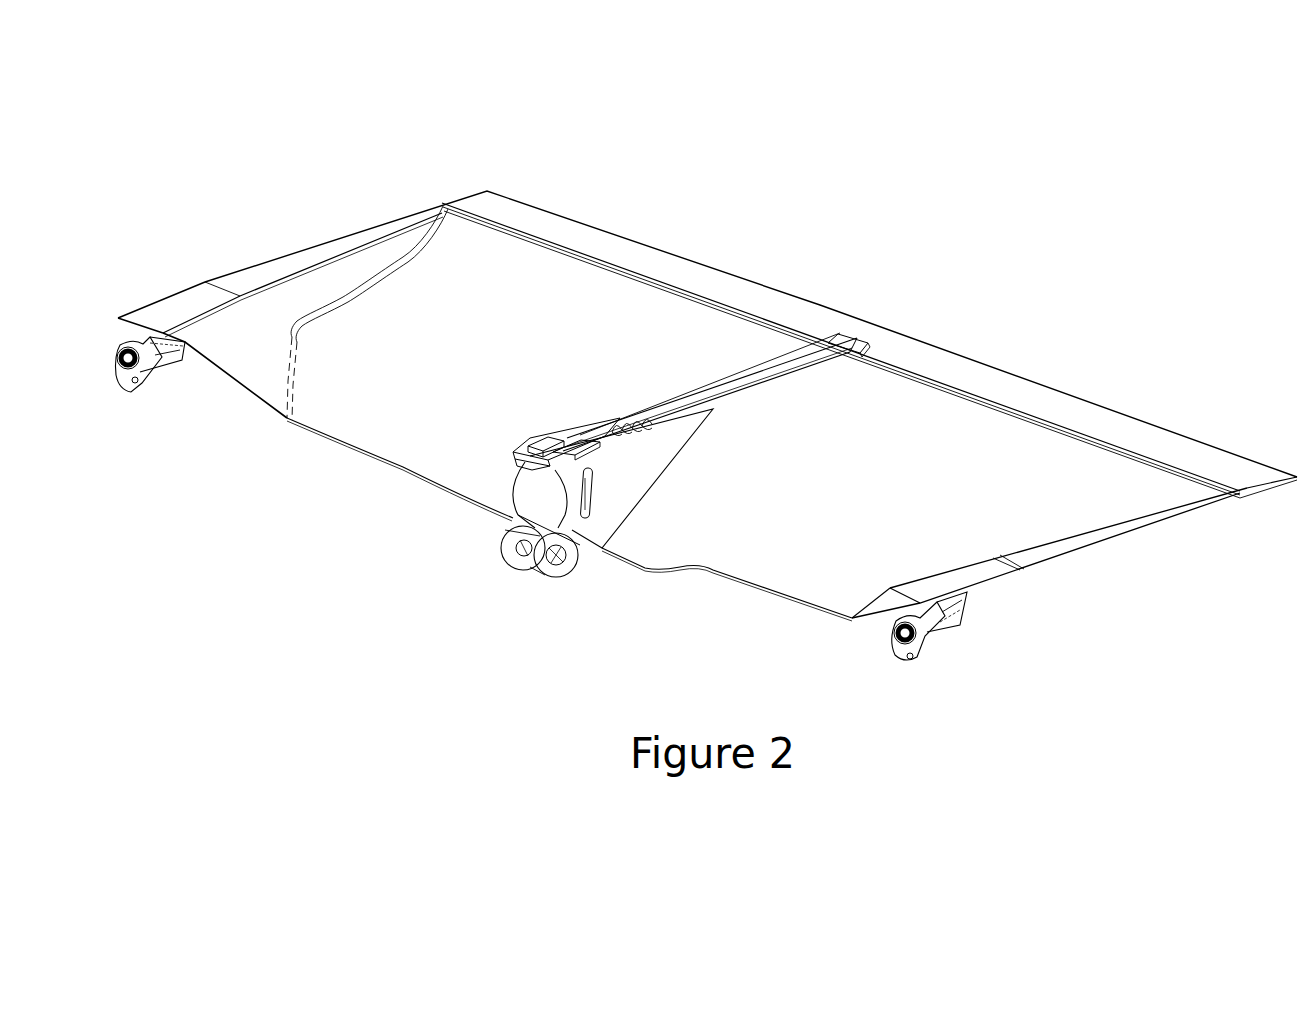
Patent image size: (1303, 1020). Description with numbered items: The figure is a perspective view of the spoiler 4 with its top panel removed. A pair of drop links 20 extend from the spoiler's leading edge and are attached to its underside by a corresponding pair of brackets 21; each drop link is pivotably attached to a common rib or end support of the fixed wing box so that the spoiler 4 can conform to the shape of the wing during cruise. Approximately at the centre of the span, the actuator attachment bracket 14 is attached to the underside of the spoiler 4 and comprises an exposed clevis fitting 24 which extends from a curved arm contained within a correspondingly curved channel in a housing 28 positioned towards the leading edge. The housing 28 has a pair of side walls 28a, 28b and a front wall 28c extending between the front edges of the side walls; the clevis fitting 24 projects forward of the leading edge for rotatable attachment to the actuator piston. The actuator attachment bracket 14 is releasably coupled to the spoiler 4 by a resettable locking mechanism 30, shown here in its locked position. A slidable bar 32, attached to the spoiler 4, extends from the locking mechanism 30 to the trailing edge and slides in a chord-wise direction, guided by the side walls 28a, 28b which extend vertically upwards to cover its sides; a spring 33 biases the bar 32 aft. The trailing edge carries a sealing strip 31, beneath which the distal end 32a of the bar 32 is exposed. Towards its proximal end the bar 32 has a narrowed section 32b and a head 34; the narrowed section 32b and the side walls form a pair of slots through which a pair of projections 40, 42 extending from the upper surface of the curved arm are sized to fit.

The spoiler 4 is at (437, 312).
The drop links 20 is at (118, 357).
The brackets 21 is at (160, 368).
The housing 28 is at (650, 505).
The side wall 28a is at (670, 442).
The side wall 28b is at (598, 425).
The front wall 28c is at (540, 495).
The resettable locking mechanism 30 is at (536, 413).
The projection 40 is at (545, 437).
The slidable bar 32 is at (747, 382).
The distal end 32a is at (850, 347).
The narrowed section 32b is at (577, 437).
The spring 33 is at (626, 425).
The projection 42 is at (577, 450).
The head 34 is at (527, 460).
The actuator attachment bracket 14 is at (496, 553).
The clevis fitting 24 is at (556, 580).
The sealing strip 31 is at (1047, 399).